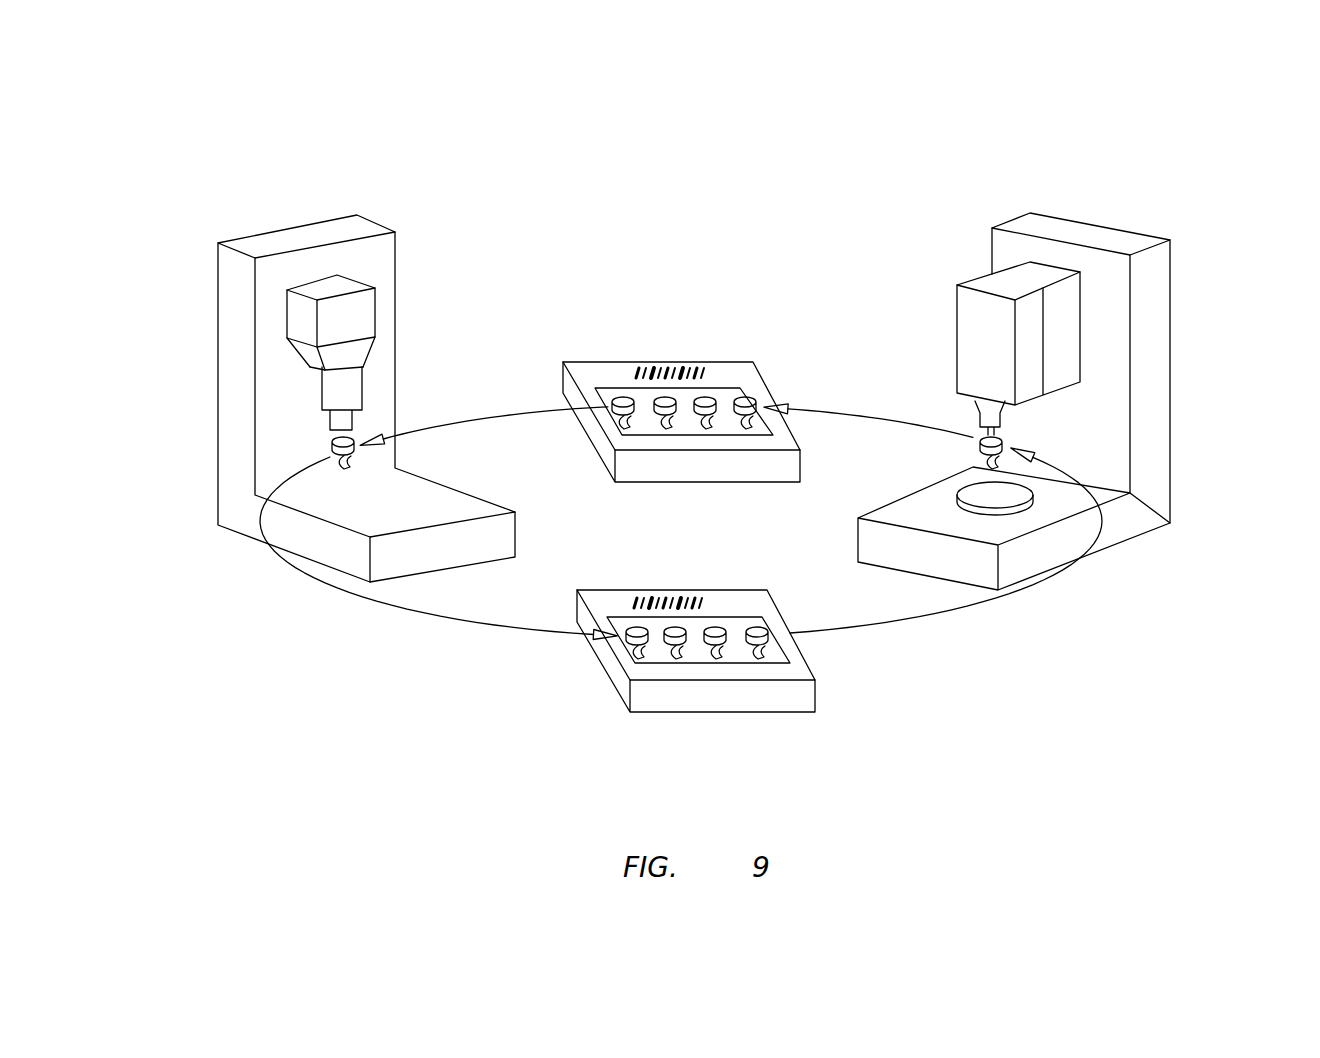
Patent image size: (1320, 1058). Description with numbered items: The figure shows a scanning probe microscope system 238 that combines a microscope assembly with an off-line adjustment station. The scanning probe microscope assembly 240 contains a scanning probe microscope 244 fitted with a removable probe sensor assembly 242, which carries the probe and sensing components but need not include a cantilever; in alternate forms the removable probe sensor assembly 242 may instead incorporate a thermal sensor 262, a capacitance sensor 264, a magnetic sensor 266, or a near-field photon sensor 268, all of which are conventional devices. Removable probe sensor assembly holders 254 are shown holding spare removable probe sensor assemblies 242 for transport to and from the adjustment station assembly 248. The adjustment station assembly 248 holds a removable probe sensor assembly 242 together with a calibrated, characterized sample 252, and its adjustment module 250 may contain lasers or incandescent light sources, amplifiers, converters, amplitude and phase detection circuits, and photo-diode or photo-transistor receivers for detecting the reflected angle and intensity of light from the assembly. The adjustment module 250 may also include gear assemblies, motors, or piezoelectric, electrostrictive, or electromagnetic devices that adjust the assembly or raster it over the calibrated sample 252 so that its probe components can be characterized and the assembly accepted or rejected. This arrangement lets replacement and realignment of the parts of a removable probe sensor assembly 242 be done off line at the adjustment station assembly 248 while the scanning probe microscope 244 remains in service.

The scanning probe microscope system 238 is at (810, 195).
The scanning probe microscope assembly 240 is at (410, 243).
The removable probe sensor assembly 242 is at (740, 390).
The scanning probe microscope 244 is at (383, 320).
The adjustment station assembly 248 is at (1055, 208).
The adjustment module 250 is at (950, 300).
The calibrated, characterized sample 252 is at (1038, 508).
The removable probe sensor assembly holders 254 is at (762, 372).
The thermal sensor 262 is at (343, 476).
The capacitance sensor 264 is at (777, 657).
The magnetic sensor 266 is at (973, 466).
The near-field photon sensor 268 is at (725, 428).